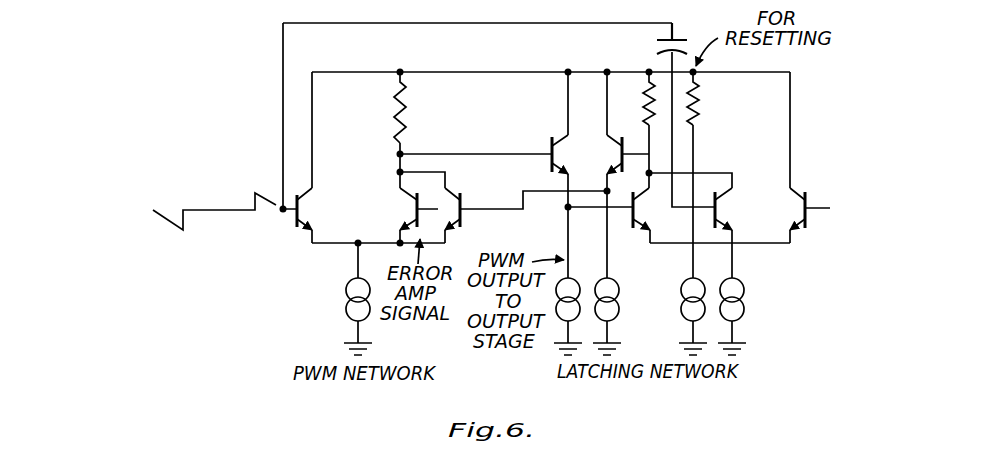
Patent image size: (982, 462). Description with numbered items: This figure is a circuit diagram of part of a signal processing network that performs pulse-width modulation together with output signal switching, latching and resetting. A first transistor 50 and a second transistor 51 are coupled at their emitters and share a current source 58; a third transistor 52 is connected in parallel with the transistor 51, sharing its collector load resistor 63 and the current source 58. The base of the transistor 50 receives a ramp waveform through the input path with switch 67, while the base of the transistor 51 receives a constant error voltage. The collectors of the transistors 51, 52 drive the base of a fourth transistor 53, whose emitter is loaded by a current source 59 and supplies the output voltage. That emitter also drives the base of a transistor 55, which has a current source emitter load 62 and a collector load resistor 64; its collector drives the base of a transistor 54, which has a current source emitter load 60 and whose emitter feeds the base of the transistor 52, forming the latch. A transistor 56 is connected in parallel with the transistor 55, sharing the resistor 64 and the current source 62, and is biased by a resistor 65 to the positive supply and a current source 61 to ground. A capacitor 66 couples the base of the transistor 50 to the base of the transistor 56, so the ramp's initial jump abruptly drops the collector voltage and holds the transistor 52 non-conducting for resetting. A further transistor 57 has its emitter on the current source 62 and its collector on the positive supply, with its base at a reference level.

The first transistor 50 is at (302, 208).
The second transistor 51 is at (410, 209).
The third transistor 52 is at (450, 190).
The fourth transistor 53 is at (555, 171).
The transistor 54 is at (620, 152).
The transistor 55 is at (647, 236).
The transistor 56 is at (722, 201).
The further transistor 57 is at (797, 232).
The current source 58 is at (346, 312).
The current source 59 is at (574, 278).
The current source emitter load 60 is at (620, 300).
The current source 61 is at (682, 297).
The current source emitter load 62 is at (745, 308).
The collector load resistor 63 is at (410, 115).
The collector load resistor 64 is at (645, 108).
The resistor 65 is at (700, 100).
The capacitor 66 is at (655, 42).
The switch 67 is at (280, 214).